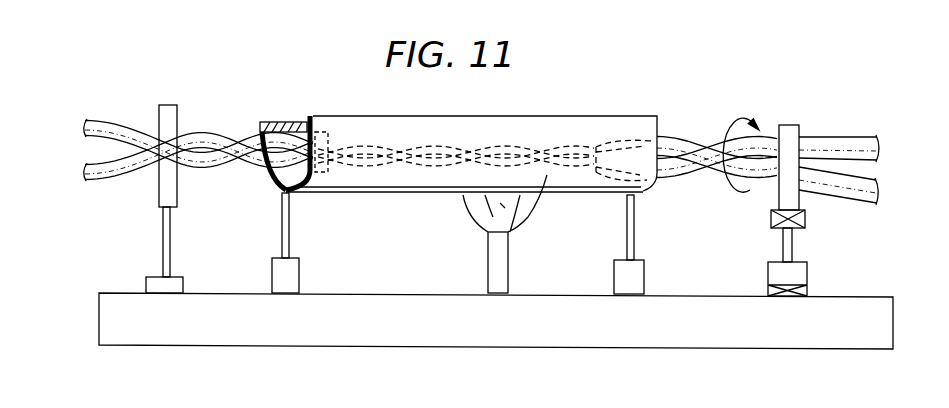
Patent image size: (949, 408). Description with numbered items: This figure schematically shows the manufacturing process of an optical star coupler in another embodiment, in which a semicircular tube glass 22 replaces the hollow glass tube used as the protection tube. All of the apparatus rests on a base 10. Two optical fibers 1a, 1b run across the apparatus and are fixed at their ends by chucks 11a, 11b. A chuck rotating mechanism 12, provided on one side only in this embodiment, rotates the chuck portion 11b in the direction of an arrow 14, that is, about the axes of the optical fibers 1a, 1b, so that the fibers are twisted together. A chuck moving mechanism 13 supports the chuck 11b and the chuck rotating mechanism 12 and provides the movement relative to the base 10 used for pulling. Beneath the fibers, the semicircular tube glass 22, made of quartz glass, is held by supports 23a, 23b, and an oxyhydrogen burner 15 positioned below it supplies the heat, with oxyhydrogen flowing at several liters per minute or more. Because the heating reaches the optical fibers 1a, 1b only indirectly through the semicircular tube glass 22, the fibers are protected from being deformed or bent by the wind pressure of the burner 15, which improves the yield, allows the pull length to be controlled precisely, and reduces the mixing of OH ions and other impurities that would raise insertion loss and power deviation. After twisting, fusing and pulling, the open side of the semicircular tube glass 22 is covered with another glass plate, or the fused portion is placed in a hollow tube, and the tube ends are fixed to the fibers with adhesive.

The optical fiber 1a is at (203, 140).
The optical fiber 1b is at (203, 166).
The base 10 is at (402, 343).
The chuck 11a is at (170, 107).
The chuck 11b is at (792, 126).
The chuck rotating mechanism 12 is at (770, 217).
The chuck moving mechanism 13 is at (768, 278).
The arrow 14 is at (743, 116).
The oxyhydrogen burner 15 is at (503, 275).
The semicircular tube glass 22 is at (362, 194).
The support 23a is at (290, 247).
The support 23b is at (640, 231).